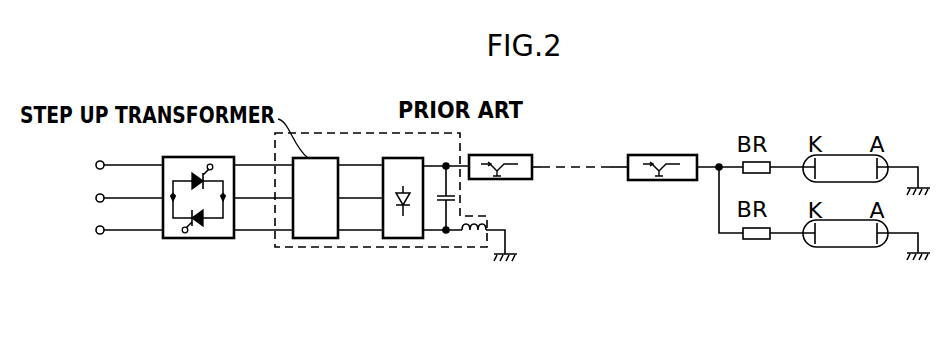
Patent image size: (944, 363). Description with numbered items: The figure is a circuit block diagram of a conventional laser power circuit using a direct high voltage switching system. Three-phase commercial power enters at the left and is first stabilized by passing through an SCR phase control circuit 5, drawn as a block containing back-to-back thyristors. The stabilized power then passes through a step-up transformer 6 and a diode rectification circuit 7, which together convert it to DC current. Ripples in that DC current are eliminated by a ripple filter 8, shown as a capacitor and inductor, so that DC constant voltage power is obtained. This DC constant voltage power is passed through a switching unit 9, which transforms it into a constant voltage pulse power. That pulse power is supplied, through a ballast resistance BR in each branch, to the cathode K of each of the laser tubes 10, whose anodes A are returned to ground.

The SCR phase control circuit 5 is at (202, 238).
The step-up transformer 6 is at (308, 238).
The diode rectification circuit 7 is at (398, 238).
The ripple filter 8 is at (453, 226).
The switching unit 9 is at (653, 155).
The laser tube 10 is at (838, 155).